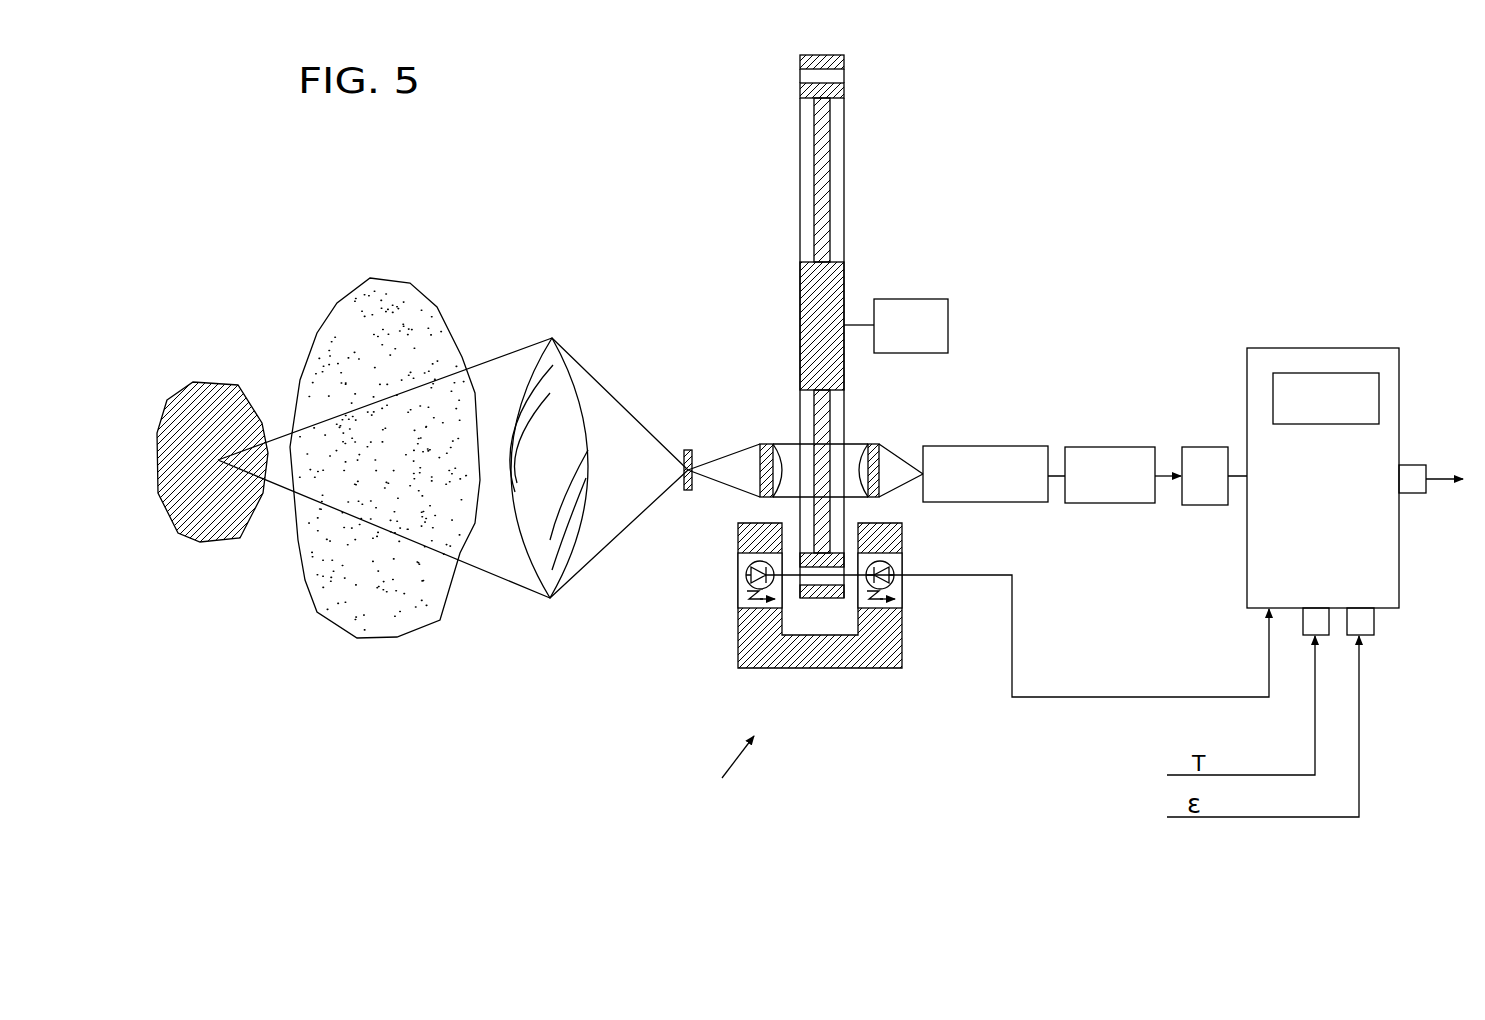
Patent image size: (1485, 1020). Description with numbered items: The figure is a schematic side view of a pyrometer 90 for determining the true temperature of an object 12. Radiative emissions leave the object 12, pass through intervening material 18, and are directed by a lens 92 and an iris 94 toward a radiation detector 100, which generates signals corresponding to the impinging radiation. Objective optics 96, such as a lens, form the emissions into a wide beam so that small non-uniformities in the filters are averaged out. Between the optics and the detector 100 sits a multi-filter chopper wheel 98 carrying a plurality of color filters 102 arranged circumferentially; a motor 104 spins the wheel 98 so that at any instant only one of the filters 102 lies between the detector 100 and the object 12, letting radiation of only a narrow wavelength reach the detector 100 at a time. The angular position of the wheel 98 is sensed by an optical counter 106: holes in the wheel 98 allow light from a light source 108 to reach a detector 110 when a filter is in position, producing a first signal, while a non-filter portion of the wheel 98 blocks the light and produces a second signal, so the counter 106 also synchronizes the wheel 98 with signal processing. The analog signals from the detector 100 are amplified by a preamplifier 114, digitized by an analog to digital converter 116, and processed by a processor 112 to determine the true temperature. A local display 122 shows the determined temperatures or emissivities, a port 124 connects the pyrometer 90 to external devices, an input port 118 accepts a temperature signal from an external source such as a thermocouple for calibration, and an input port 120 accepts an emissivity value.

The object 12 is at (218, 380).
The intervening material 18 is at (387, 277).
The pyrometer 90 is at (724, 771).
The lens 92 is at (570, 370).
The iris 94 is at (687, 450).
The objective optics 96 is at (767, 443).
The multi-filter chopper wheel 98 is at (833, 55).
The radiation detector 100 is at (1013, 446).
The color filters 102 is at (830, 158).
The motor 104 is at (920, 299).
The optical counter 106 is at (857, 668).
The light source 108 is at (747, 578).
The detector 110 is at (893, 570).
The processor 112 is at (1265, 348).
The preamplifier 114 is at (1115, 447).
The analog to digital converter 116 is at (1185, 505).
The input port 118 is at (1304, 636).
The input port 120 is at (1374, 625).
The local display 122 is at (1360, 373).
The port 124 is at (1420, 465).